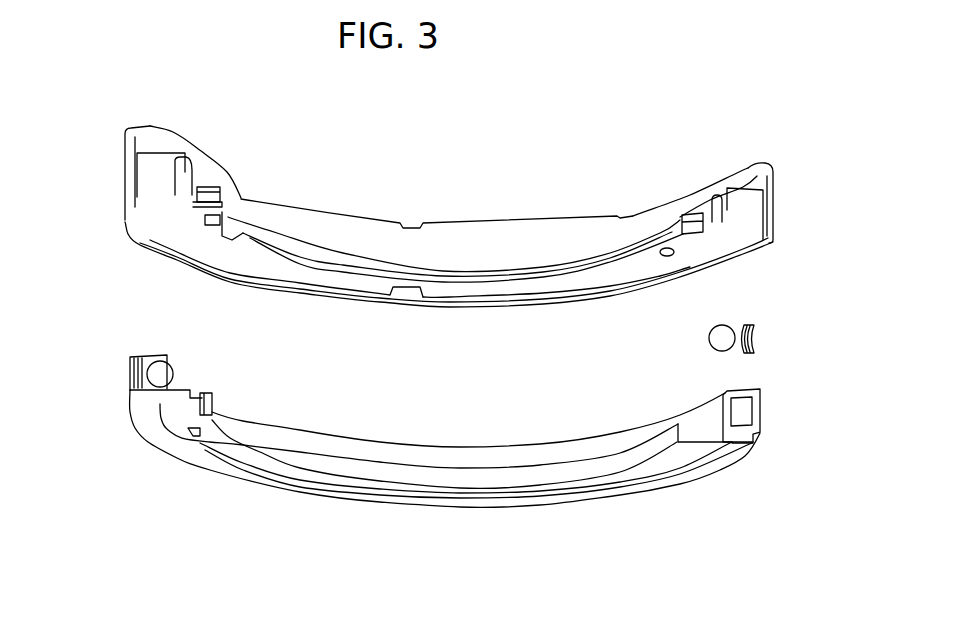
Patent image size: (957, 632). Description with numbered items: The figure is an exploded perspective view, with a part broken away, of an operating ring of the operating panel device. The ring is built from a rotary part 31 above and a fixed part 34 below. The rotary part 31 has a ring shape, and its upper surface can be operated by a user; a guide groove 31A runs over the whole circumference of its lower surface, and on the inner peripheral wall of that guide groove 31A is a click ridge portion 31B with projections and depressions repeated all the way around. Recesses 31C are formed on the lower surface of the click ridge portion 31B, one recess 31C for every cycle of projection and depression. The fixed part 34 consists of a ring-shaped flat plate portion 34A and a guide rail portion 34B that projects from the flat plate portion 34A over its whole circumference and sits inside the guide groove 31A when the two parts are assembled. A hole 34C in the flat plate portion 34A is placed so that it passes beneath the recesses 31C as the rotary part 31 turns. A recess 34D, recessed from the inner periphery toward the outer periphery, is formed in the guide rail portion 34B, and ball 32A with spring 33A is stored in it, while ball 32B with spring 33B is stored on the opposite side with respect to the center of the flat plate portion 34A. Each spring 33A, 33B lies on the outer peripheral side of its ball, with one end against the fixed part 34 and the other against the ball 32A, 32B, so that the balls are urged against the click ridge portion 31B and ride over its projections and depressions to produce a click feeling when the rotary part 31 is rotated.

The rotary part 31 is at (203, 152).
The guide groove 31A is at (167, 207).
The click ridge portion 31B is at (200, 220).
The recess 31C is at (222, 213).
The ball 32A is at (158, 372).
The ball 32B is at (725, 343).
The spring 33A is at (138, 385).
The spring 33B is at (757, 335).
The fixed part 34 is at (717, 555).
The flat plate portion 34A is at (673, 450).
The guide rail portion 34B is at (710, 415).
The hole 34C is at (195, 434).
The recess 34D is at (132, 357).